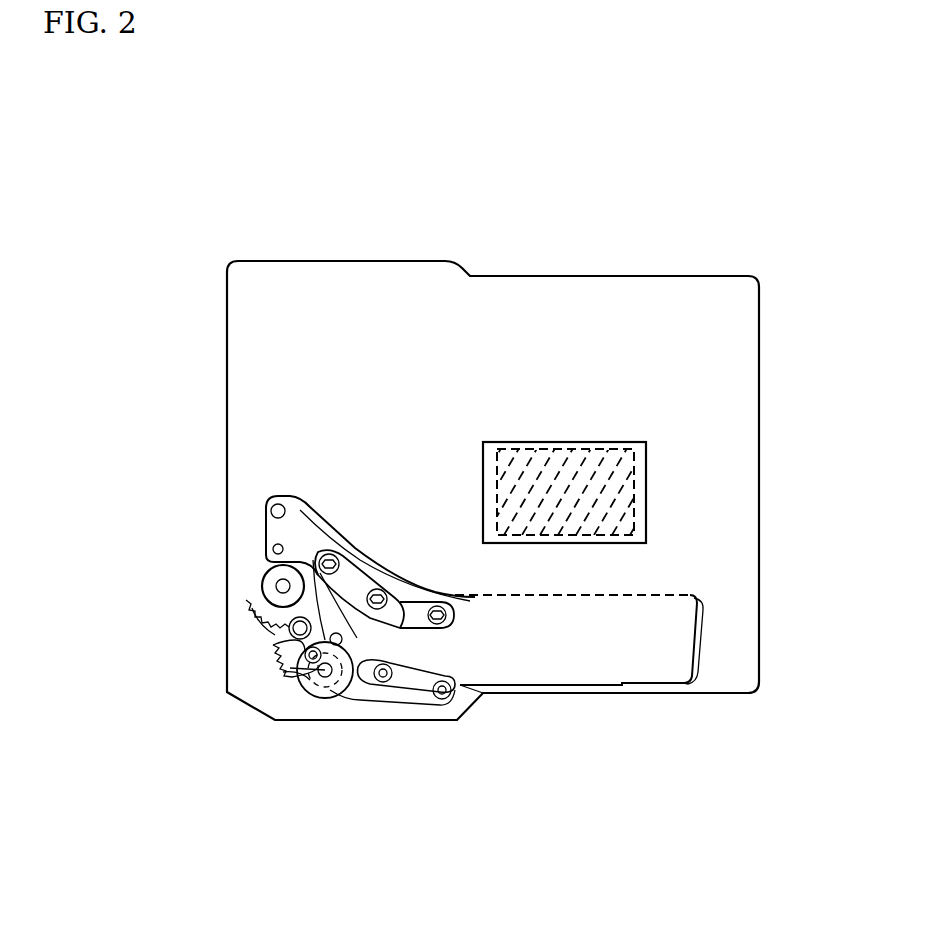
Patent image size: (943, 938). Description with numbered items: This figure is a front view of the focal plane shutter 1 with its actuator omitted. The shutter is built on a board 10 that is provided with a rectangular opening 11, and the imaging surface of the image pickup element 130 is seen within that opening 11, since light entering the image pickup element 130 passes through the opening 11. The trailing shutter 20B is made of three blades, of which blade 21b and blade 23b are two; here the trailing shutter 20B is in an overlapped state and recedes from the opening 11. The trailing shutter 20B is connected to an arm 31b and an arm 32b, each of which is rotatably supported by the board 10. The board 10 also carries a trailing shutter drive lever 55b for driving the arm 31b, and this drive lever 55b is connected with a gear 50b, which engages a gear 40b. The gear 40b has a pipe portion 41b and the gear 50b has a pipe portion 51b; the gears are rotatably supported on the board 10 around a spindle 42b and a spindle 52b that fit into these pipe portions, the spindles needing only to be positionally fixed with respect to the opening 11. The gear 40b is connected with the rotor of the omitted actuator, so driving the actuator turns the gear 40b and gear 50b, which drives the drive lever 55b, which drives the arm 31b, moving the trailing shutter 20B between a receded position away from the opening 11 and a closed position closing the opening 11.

The focal plane shutter 1 is at (393, 742).
The board 10 is at (317, 723).
The opening 11 is at (636, 497).
The image pickup element 130 is at (636, 453).
The trailing shutter 20B is at (533, 688).
The blade 21b is at (640, 668).
The blade 23b is at (686, 683).
The arm 31b is at (432, 700).
The arm 32b is at (275, 531).
The gear 40b is at (273, 663).
The pipe portion 41b is at (347, 700).
The spindle 42b is at (283, 672).
The gear 50b is at (252, 613).
The pipe portion 51b is at (272, 594).
The spindle 52b is at (283, 586).
The trailing shutter drive lever 55b is at (282, 632).